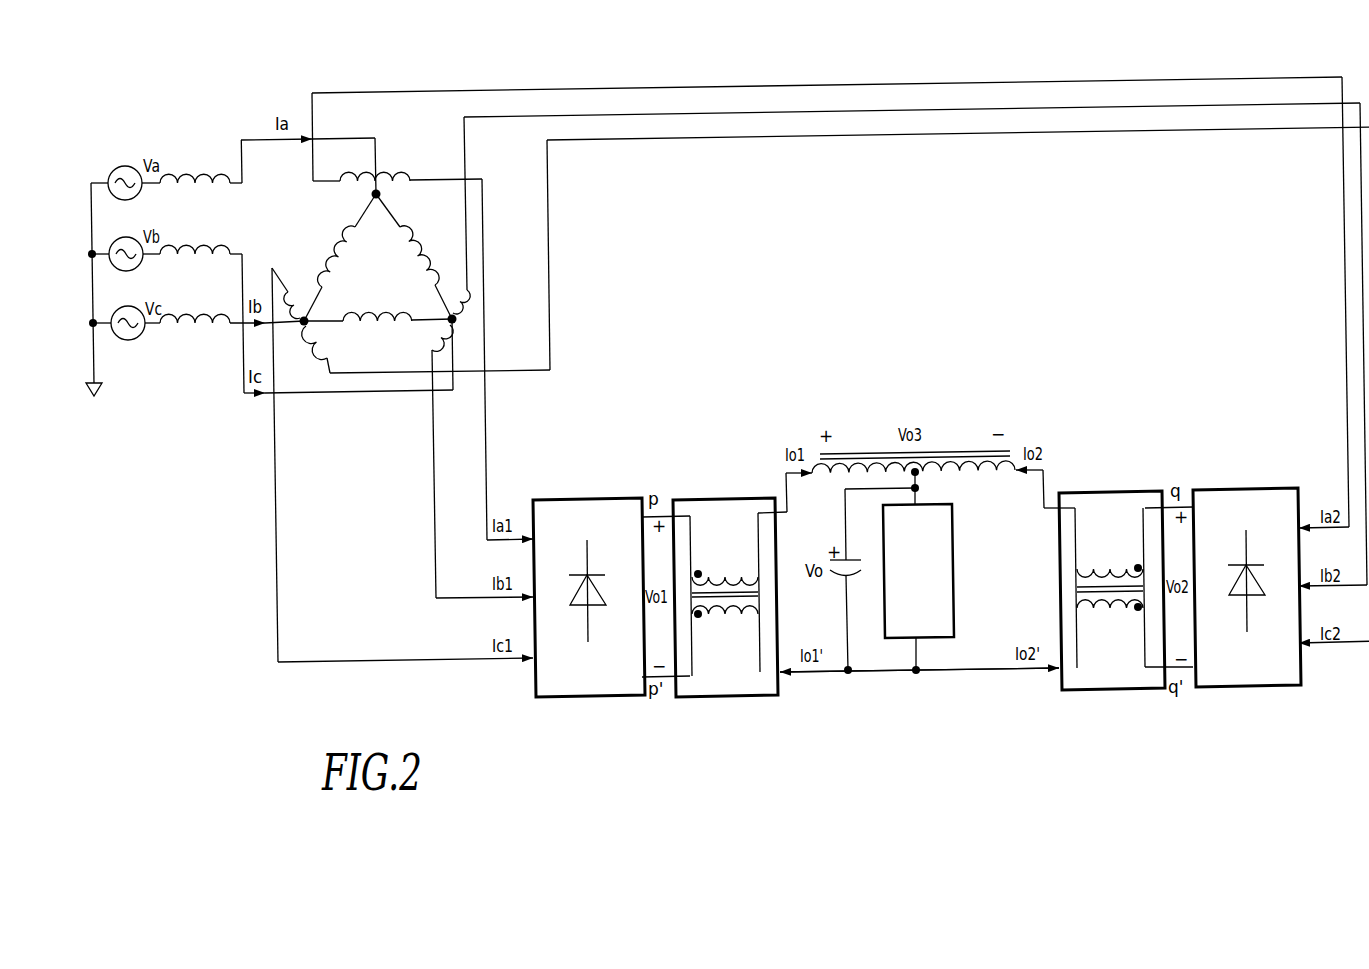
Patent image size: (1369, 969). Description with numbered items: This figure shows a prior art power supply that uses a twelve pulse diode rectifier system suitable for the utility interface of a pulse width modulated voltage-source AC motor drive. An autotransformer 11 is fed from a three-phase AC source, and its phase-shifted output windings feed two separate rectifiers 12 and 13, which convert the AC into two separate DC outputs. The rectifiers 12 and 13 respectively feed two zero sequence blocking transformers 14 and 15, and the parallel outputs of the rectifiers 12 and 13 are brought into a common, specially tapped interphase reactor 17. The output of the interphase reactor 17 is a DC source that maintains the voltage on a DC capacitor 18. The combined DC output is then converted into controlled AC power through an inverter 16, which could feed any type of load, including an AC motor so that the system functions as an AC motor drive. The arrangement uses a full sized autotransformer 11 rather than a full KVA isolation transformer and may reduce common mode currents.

The autotransformer 11 is at (420, 75).
The rectifier 12 is at (562, 500).
The rectifier 13 is at (1222, 490).
The zero sequence blocking transformer 14 is at (766, 695).
The zero sequence blocking transformer 15 is at (1070, 690).
The inverter 16 is at (954, 562).
The interphase reactor 17 is at (950, 452).
The DC capacitor 18 is at (854, 577).